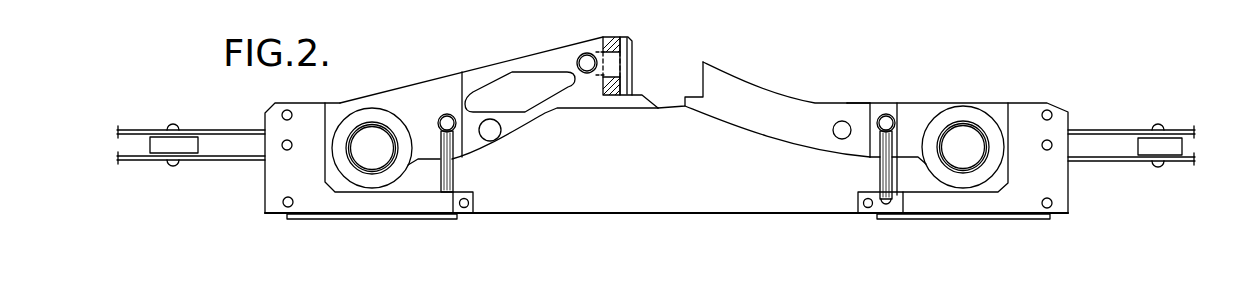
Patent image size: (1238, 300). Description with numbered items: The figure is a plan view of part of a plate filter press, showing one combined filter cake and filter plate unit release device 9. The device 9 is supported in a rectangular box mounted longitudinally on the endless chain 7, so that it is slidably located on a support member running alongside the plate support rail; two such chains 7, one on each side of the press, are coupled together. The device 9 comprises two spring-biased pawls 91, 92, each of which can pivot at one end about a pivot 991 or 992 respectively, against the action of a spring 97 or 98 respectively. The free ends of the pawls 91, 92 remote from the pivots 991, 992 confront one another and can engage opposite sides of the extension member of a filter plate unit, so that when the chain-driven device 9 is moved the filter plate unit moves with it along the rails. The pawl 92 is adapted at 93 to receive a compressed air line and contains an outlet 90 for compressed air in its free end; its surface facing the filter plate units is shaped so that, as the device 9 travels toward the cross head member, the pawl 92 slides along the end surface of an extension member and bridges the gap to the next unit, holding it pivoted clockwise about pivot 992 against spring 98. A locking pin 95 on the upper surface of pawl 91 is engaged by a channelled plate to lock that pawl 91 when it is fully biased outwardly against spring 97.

The endless chain 7 is at (219, 130).
The combined filter cake and filter plate unit release device 9 is at (675, 246).
The outlet 90 is at (634, 64).
The pawl 91 is at (858, 105).
The pawl 92 is at (516, 62).
The compressed air line connection 93 is at (588, 55).
The locking pin 95 is at (843, 121).
The spring 97 is at (880, 182).
The spring 98 is at (453, 178).
The pivot 991 is at (962, 133).
The pivot 992 is at (373, 160).